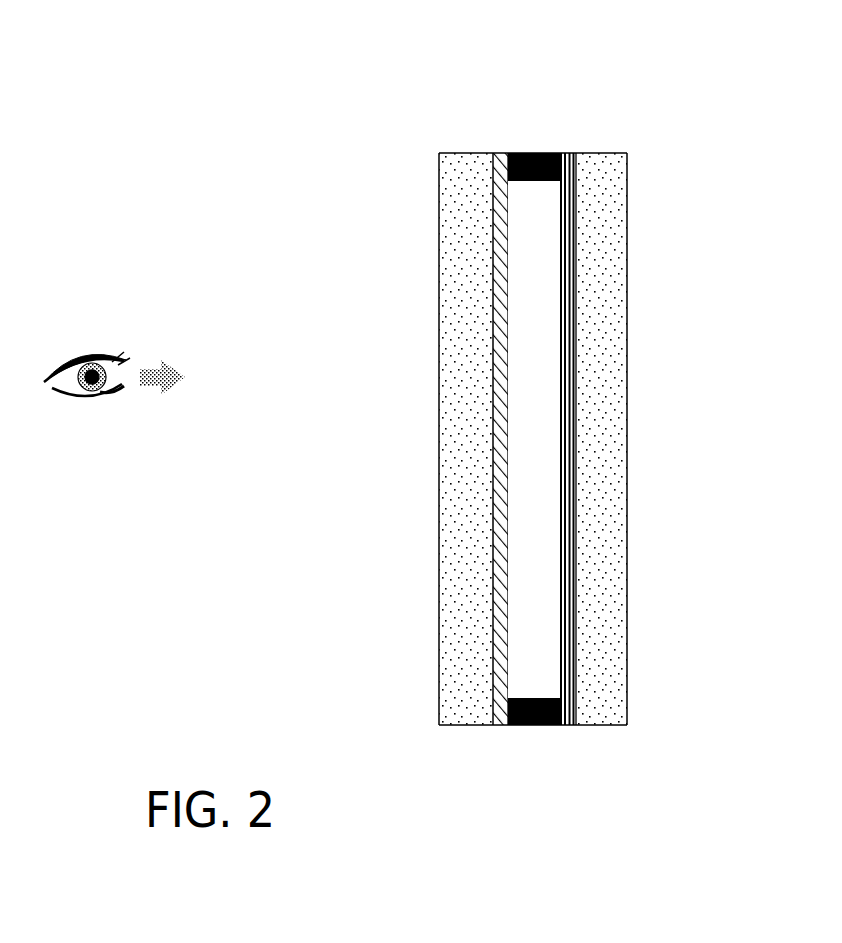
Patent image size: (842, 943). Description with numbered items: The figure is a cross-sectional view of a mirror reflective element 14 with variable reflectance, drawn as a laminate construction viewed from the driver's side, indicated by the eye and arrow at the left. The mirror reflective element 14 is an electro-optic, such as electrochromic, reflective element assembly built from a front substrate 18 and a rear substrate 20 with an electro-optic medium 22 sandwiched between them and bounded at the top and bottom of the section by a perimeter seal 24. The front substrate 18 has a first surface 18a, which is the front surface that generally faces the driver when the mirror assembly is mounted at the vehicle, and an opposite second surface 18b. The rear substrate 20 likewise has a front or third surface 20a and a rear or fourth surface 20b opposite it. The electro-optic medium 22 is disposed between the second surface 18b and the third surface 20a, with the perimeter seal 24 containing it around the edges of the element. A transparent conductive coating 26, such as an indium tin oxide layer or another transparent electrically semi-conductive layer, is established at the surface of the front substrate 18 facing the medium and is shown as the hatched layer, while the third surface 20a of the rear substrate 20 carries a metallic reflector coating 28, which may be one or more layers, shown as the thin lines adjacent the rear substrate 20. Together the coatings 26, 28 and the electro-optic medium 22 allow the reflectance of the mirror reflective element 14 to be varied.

The mirror reflective element 14 is at (530, 402).
The front substrate 18 is at (565, 439).
The first surface 18a is at (440, 340).
The second surface 18b is at (495, 598).
The rear substrate 20 is at (654, 439).
The third surface 20a is at (575, 332).
The fourth surface 20b is at (628, 227).
The electro-optic medium 22 is at (533, 290).
The perimeter seal 24 is at (540, 153).
The transparent conductive coating 26 is at (503, 520).
The metallic reflector coating 28 is at (567, 480).